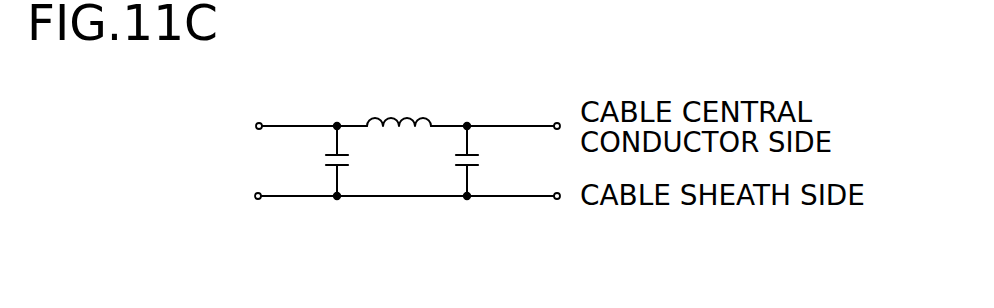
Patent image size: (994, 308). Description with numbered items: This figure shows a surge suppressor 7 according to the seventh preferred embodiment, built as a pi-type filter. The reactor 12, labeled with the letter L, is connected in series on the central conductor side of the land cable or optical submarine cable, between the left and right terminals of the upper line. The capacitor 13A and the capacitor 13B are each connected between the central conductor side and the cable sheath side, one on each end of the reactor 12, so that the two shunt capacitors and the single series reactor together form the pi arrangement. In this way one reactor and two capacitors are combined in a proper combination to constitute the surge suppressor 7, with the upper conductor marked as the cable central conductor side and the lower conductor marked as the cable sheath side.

The surge suppressor 7 is at (403, 169).
The reactor 12 is at (426, 120).
The capacitor 13A is at (325, 165).
The capacitor 13B is at (478, 165).